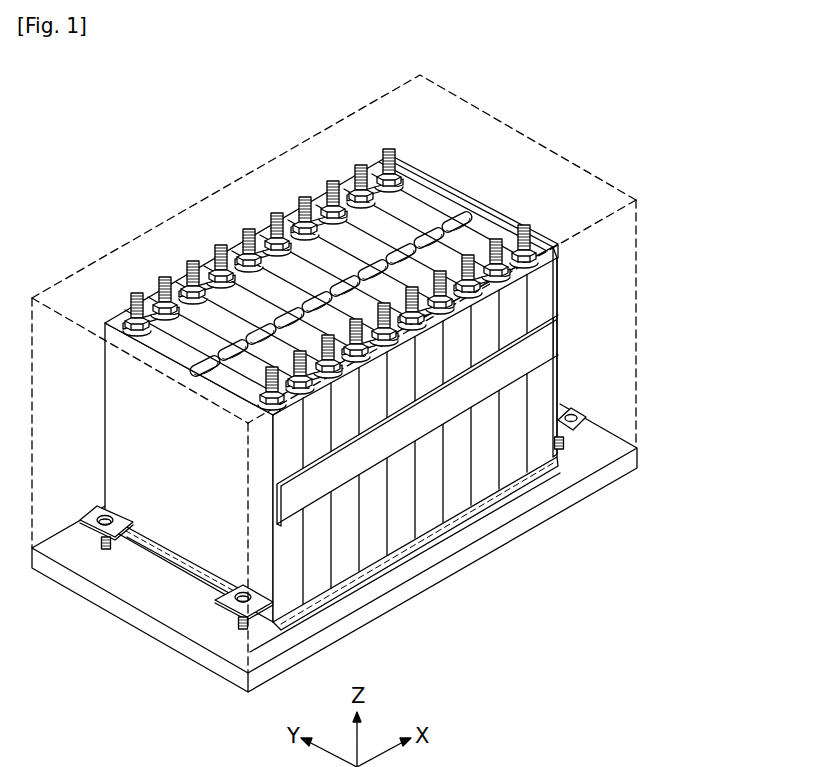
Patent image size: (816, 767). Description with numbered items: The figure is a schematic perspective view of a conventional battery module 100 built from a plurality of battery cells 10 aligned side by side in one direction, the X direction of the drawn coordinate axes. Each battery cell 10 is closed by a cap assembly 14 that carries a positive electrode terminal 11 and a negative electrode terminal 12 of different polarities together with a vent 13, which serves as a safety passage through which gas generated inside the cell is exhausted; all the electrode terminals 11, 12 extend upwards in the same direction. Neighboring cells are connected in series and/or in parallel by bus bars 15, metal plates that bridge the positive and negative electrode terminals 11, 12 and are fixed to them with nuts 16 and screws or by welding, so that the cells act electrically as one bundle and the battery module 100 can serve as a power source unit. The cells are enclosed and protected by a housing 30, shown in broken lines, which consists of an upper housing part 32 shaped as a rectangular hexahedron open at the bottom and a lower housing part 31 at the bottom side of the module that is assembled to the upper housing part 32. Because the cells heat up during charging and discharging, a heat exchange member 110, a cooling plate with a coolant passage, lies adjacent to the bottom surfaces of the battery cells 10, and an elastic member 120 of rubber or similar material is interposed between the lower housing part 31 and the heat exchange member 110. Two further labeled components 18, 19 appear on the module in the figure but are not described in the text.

The battery cell 10 is at (492, 462).
The positive electrode terminal 11 is at (392, 150).
The negative electrode terminal 12 is at (524, 226).
The vent 13 is at (455, 212).
The cap assembly 14 is at (482, 232).
The bus bar 15 is at (230, 242).
The nut 16 is at (127, 315).
The fixing band 18 is at (488, 415).
The band plate 19 is at (556, 344).
The housing 30 is at (334, 362).
The lower housing part 31 is at (497, 540).
The upper housing part 32 is at (540, 122).
The battery module 100 is at (379, 378).
The heat exchange member 110 is at (375, 553).
The elastic member 120 is at (422, 538).